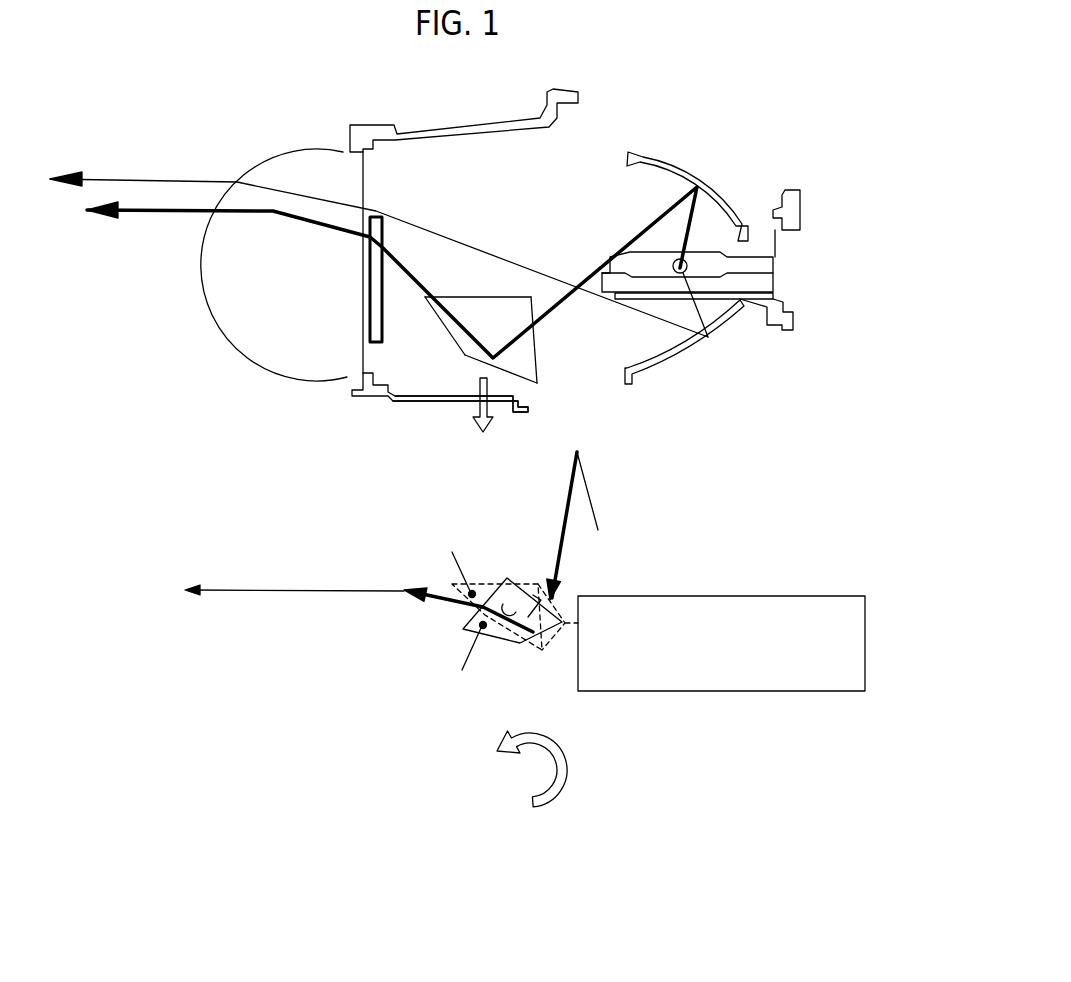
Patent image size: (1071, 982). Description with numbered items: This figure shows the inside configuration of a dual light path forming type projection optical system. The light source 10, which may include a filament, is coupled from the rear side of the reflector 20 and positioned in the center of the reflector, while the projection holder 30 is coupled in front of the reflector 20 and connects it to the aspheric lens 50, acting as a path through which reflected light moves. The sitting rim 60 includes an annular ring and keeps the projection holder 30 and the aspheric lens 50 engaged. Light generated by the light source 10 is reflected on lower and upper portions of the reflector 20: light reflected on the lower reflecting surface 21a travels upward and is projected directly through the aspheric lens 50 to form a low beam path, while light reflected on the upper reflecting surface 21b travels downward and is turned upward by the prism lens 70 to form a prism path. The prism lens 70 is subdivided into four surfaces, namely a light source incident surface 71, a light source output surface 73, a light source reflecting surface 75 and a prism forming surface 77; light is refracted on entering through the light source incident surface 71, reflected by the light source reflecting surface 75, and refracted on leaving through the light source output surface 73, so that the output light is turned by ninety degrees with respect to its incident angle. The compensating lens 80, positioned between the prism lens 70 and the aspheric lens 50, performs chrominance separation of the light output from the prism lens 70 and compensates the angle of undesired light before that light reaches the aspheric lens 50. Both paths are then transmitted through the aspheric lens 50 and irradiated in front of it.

The light source 10 is at (703, 270).
The reflector 20 is at (791, 212).
The lower reflecting surface 21a is at (662, 370).
The upper reflecting surface 21b is at (653, 163).
The projection holder 30 is at (427, 403).
The aspheric lens 50 is at (256, 282).
The sitting rim 60 is at (364, 396).
The prism lens 70 is at (525, 548).
The light source incident surface 71 is at (542, 350).
The light source output surface 73 is at (480, 296).
The light source reflecting surface 75 is at (480, 362).
The prism forming surface 77 is at (443, 320).
The compensating lens 80 is at (383, 232).